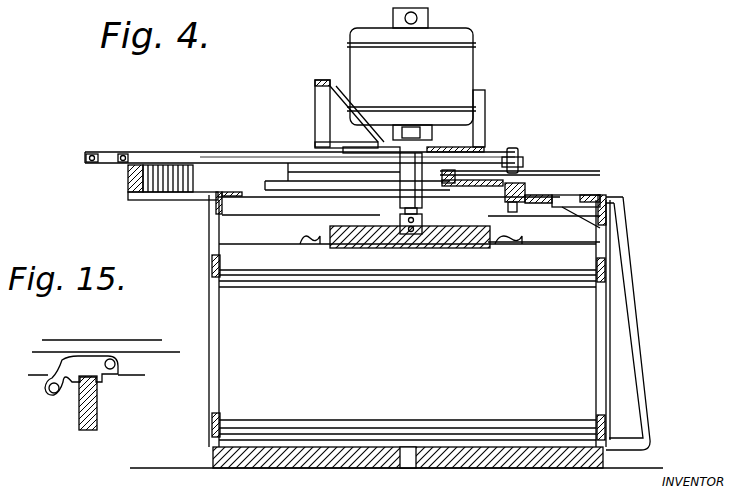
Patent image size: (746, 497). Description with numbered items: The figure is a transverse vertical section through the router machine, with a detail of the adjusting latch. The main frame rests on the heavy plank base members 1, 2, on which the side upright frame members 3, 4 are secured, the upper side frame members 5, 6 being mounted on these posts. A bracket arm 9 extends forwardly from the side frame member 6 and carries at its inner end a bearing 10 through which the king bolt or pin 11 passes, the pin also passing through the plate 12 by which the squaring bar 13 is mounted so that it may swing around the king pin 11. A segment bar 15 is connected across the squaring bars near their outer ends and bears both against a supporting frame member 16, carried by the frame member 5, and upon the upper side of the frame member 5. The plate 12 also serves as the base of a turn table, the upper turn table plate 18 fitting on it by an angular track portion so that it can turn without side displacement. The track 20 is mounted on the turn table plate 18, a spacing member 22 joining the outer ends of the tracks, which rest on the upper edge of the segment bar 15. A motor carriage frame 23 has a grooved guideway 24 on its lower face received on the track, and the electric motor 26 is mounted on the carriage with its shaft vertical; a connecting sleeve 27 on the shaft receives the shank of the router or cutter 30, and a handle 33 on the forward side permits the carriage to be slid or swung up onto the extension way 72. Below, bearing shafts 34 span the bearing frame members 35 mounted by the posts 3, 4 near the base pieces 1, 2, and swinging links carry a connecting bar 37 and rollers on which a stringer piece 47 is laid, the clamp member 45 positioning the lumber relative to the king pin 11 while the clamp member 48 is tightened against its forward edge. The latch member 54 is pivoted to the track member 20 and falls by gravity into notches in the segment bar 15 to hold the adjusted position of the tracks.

In FIG. 4, the base member 1 is at (314, 464).
In FIG. 4, the base member 2 is at (482, 463).
In FIG. 4, the side upright frame member 3 is at (209, 380).
In FIG. 4, the side upright frame member 4 is at (612, 337).
In FIG. 4, the upper side frame member 5 is at (215, 202).
In FIG. 4, the upper side frame member 6 is at (606, 199).
In FIG. 4, the bracket arm 9 is at (576, 195).
In FIG. 4, the bearing 10 is at (530, 205).
In FIG. 4, the king bolt or pin 11 is at (522, 183).
In FIG. 4, the plate 12 is at (500, 214).
In FIG. 4, the squaring bar 13 is at (292, 187).
In FIG. 4, the segment bar 15 is at (130, 182).
In FIG. 15, the segment bar 15 is at (96, 413).
In FIG. 4, the supporting frame member 16 is at (135, 198).
In FIG. 4, the upper turn table plate 18 is at (456, 180).
In FIG. 4, the track 20 is at (184, 152).
In FIG. 15, the track 20 is at (135, 357).
In FIG. 4, the spacing member 22 is at (84, 160).
In FIG. 4, the motor carriage frame 23 is at (378, 147).
In FIG. 4, the grooved guideway 24 is at (458, 150).
In FIG. 4, the electric motor 26 is at (465, 62).
In FIG. 4, the connecting sleeve 27 is at (408, 190).
In FIG. 4, the router or cutter 30 is at (417, 234).
In FIG. 4, the handle 33 is at (315, 95).
In FIG. 4, the bearing shaft 34 is at (370, 426).
In FIG. 4, the bearing frame member 35 is at (212, 430).
In FIG. 4, the connecting bar 37 is at (213, 258).
In FIG. 4, the clamp member 45 is at (510, 248).
In FIG. 4, the stringer piece 47 is at (390, 250).
In FIG. 4, the clamp member 48 is at (312, 250).
In FIG. 15, the latch member 54 is at (66, 400).
In FIG. 4, the extension way 72 is at (486, 100).